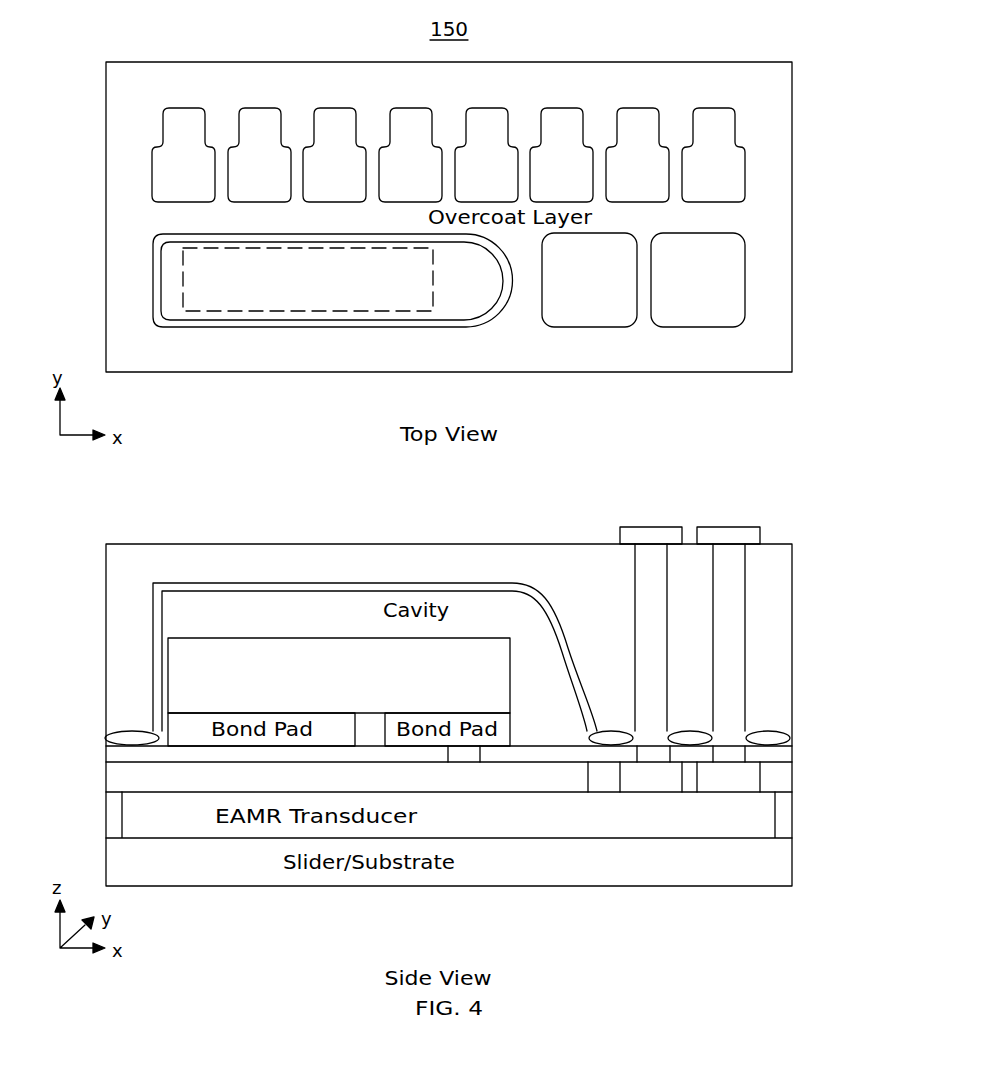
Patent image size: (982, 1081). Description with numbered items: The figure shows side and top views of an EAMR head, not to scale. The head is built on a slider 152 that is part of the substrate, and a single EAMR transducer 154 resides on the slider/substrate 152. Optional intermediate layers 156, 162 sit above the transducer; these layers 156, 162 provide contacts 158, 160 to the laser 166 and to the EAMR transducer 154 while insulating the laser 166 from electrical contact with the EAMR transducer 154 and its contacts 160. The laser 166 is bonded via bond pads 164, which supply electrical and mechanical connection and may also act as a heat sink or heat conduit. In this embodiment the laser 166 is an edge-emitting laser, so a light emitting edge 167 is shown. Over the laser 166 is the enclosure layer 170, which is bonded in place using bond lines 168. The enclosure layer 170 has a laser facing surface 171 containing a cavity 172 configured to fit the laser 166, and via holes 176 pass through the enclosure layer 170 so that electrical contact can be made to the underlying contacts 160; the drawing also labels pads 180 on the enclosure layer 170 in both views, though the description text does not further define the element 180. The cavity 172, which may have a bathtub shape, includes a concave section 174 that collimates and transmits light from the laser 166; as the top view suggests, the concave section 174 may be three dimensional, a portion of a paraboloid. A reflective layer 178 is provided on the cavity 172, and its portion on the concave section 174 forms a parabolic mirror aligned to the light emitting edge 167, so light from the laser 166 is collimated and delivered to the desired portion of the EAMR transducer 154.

The slider 152 is at (417, 887).
The EAMR transducer 154 is at (230, 840).
The intermediate layer 156 is at (103, 788).
The contact 158 is at (465, 762).
The contact 160 is at (727, 793).
The intermediate layer 162 is at (588, 762).
The bond pad 164 is at (420, 747).
The laser 166 is at (357, 311).
The light emitting edge 167 is at (500, 683).
The bond line 168 is at (132, 731).
The enclosure layer 170 is at (106, 108).
The laser facing surface 171 is at (617, 722).
The cavity 172 is at (172, 327).
The concave section 174 is at (463, 257).
The via hole 176 is at (715, 618).
The reflective layer 178 is at (222, 320).
The bond pads 180 is at (768, 138).